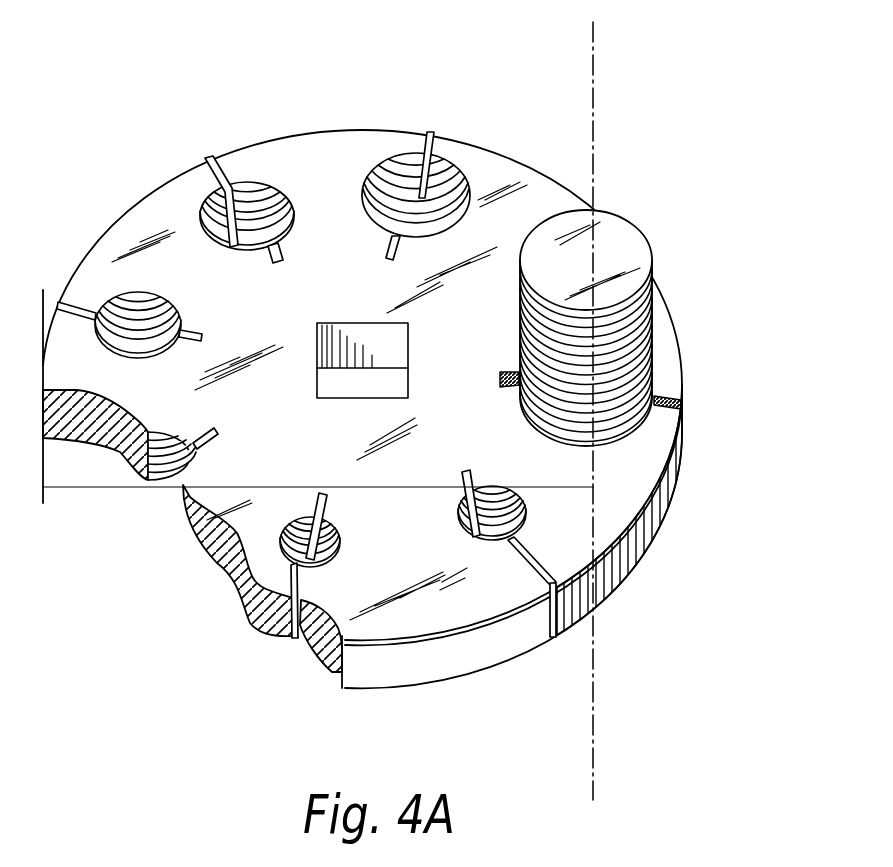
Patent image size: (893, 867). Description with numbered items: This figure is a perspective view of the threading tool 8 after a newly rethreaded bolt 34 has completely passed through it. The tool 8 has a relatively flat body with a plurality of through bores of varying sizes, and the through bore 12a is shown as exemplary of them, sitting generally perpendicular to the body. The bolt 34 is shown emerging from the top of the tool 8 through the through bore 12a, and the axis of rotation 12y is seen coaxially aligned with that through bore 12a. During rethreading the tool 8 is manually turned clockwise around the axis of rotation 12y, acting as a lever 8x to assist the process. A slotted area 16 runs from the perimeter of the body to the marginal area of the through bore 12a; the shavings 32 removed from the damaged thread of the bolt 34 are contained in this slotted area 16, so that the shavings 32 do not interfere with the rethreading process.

The threading tool 8 is at (118, 182).
The lever 8x is at (318, 470).
The axis of rotation 12y is at (593, 132).
The through bore 12a is at (645, 421).
The slotted area 16 is at (664, 394).
The shavings 32 is at (495, 372).
The newly rethreaded bolt 34 is at (658, 326).